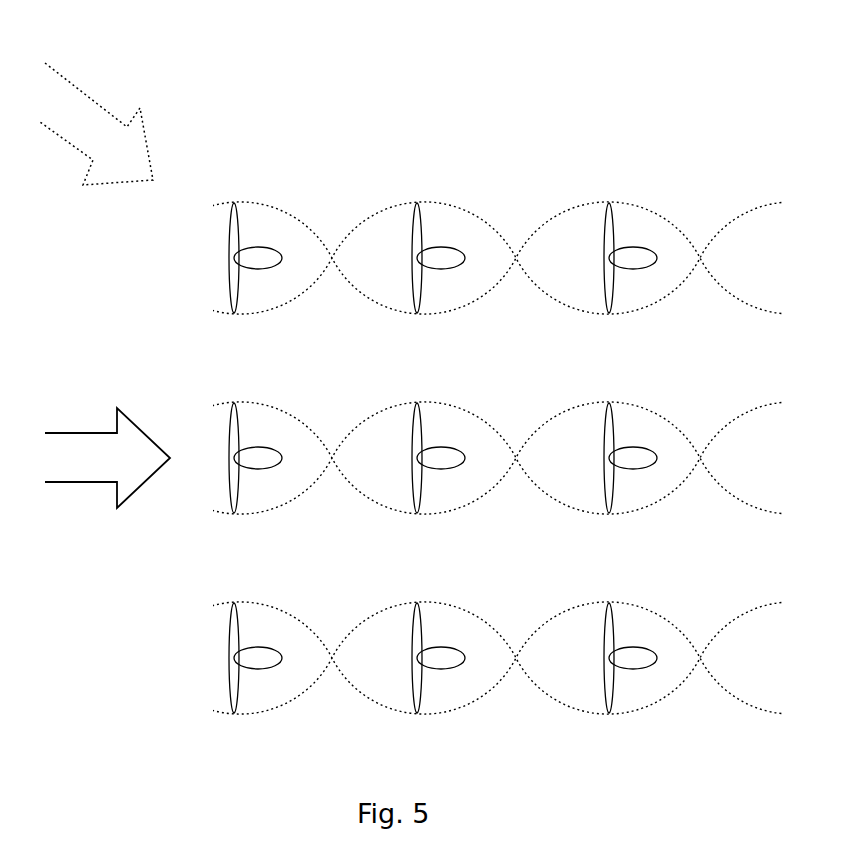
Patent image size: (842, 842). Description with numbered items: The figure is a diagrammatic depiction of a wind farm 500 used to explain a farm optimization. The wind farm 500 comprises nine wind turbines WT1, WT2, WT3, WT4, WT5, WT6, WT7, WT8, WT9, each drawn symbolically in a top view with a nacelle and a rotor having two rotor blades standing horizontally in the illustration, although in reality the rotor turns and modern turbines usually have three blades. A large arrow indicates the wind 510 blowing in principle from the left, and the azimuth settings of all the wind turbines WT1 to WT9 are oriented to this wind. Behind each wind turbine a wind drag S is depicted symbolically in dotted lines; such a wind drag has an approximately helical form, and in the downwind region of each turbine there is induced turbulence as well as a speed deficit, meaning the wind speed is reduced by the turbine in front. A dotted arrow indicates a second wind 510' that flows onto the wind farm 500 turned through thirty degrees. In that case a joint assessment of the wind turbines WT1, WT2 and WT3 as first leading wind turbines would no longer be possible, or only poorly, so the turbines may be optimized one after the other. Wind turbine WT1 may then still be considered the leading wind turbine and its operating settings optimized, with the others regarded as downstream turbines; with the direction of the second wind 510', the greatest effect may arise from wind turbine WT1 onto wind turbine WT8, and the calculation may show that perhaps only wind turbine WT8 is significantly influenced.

The wind farm 500 is at (628, 110).
The wind 510 is at (107, 495).
The second wind 510' is at (114, 98).
The wind drag S is at (300, 222).
The wind turbine WT1 is at (251, 238).
The wind turbine WT2 is at (251, 438).
The wind turbine WT3 is at (251, 638).
The wind turbine WT4 is at (433, 238).
The wind turbine WT5 is at (433, 438).
The wind turbine WT6 is at (433, 638).
The wind turbine WT7 is at (622, 238).
The wind turbine WT8 is at (622, 438).
The wind turbine WT9 is at (622, 638).